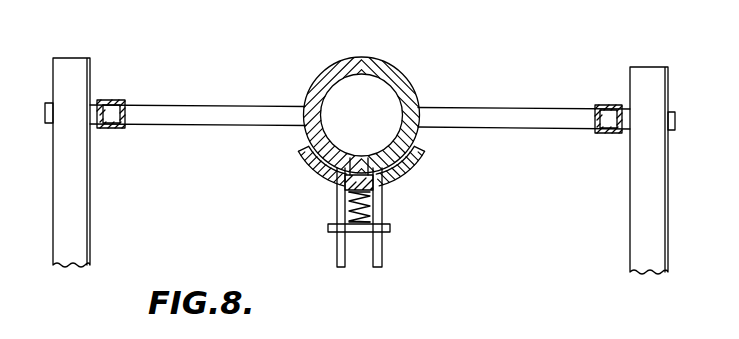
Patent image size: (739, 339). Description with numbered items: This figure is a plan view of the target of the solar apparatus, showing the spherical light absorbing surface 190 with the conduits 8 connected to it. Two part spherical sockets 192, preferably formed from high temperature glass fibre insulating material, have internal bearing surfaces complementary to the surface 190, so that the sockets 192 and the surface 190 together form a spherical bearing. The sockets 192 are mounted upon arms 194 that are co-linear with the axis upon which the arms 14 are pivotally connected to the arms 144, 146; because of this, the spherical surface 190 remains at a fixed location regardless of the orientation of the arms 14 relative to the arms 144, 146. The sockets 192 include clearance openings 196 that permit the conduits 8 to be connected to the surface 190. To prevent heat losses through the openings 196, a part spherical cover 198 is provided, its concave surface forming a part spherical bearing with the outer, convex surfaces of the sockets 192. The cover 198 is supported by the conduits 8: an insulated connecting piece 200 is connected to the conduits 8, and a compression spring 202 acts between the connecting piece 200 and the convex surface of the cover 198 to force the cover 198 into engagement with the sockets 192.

The conduits 8 is at (337, 258).
The arms 14 is at (117, 131).
The arm 144 is at (78, 231).
The arm 146 is at (637, 253).
The spherical light absorbing surface 190 is at (388, 113).
The part spherical sockets 192 is at (323, 75).
The arms 194 is at (201, 127).
The clearance openings 196 is at (333, 188).
The part spherical cover 198 is at (405, 167).
The insulated connecting piece 200 is at (390, 229).
The compression spring 202 is at (346, 213).